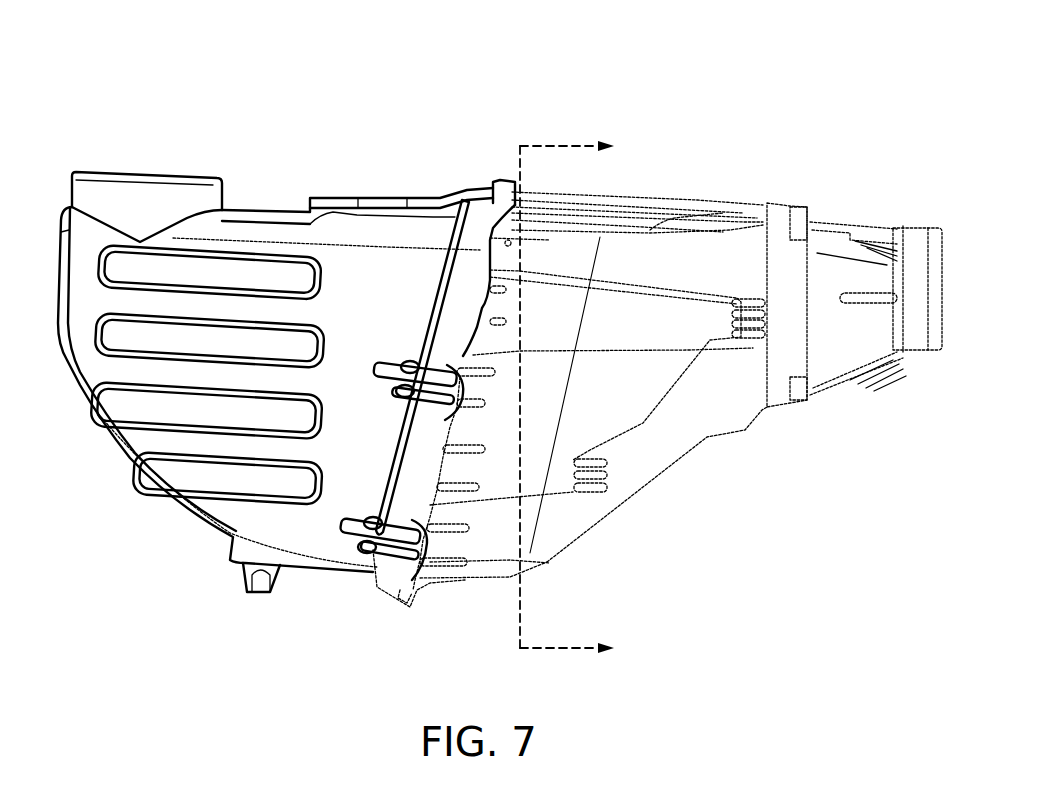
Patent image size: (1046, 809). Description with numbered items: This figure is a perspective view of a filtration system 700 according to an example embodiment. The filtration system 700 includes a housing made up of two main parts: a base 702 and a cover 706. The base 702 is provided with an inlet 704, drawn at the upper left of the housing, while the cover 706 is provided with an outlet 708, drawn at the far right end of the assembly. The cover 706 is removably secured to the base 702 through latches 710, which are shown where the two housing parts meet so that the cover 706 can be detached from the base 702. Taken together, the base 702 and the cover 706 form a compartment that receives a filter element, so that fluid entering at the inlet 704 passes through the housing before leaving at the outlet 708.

The filtration system 700 is at (130, 82).
The base 702 is at (167, 470).
The inlet 704 is at (112, 195).
The cover 706 is at (647, 423).
The outlet 708 is at (917, 237).
The latches 710 is at (407, 367).